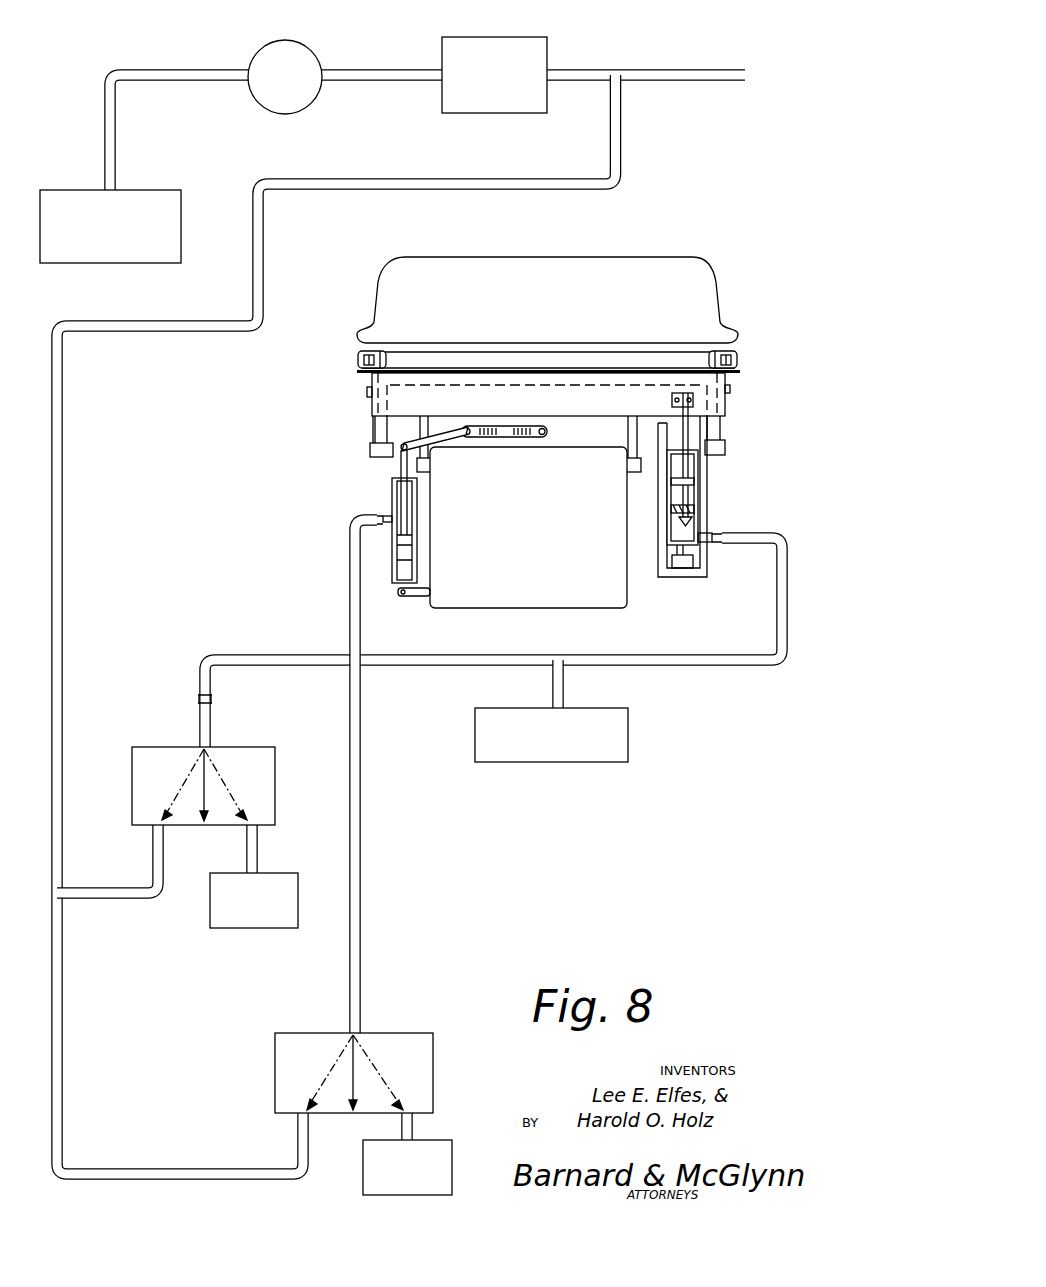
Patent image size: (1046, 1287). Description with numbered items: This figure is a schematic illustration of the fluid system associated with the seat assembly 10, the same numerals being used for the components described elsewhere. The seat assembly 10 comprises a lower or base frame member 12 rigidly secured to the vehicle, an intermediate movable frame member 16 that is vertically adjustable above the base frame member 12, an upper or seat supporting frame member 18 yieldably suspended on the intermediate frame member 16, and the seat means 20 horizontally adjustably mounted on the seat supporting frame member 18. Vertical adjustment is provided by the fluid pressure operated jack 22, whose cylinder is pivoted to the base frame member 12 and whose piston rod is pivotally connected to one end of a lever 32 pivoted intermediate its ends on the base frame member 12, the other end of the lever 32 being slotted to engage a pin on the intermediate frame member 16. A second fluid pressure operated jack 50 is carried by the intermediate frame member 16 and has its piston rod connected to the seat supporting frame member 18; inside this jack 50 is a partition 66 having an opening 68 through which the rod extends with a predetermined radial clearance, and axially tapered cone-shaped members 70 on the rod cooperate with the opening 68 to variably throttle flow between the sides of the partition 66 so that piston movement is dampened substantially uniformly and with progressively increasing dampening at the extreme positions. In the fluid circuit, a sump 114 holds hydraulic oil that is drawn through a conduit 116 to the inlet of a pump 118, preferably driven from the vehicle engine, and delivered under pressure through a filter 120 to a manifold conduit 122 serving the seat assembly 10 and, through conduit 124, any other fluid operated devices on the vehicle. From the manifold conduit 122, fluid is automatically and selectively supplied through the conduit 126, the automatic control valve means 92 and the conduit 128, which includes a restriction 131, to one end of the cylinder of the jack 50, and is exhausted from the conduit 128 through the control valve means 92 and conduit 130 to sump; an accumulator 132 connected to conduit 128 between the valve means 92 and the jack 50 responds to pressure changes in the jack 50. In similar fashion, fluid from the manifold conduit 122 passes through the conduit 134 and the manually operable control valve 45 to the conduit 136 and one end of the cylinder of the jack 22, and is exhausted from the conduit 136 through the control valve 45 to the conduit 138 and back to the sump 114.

The seat assembly 10 is at (370, 406).
The lower or base frame member 12 is at (526, 606).
The intermediate movable frame member 16 is at (653, 428).
The upper or seat supporting frame member 18 is at (729, 400).
The seat means 20 is at (661, 256).
The fluid pressure operated motor means or jack 22 is at (392, 484).
The lever 32 is at (530, 437).
The manually operable control valve 45 is at (433, 1087).
The fluid pressure operated motor means or jack 50 is at (697, 486).
The partition 66 is at (684, 513).
The opening 68 is at (690, 518).
The axially tapered cone-shaped members 70 is at (684, 523).
The automatic control valve means 92 is at (232, 748).
The sump 114 is at (181, 234).
The conduit 116 is at (218, 58).
The pump 118 is at (292, 50).
The filter 120 is at (495, 50).
The manifold conduit 122 is at (330, 183).
The conduit 124 is at (700, 75).
The conduit 126 is at (118, 898).
The conduit 128 is at (283, 660).
The conduit 130 is at (257, 853).
The restriction 131 is at (195, 700).
The accumulator 132 is at (556, 762).
The conduit 134 is at (243, 1148).
The conduit 136 is at (360, 983).
The conduit 138 is at (412, 1128).